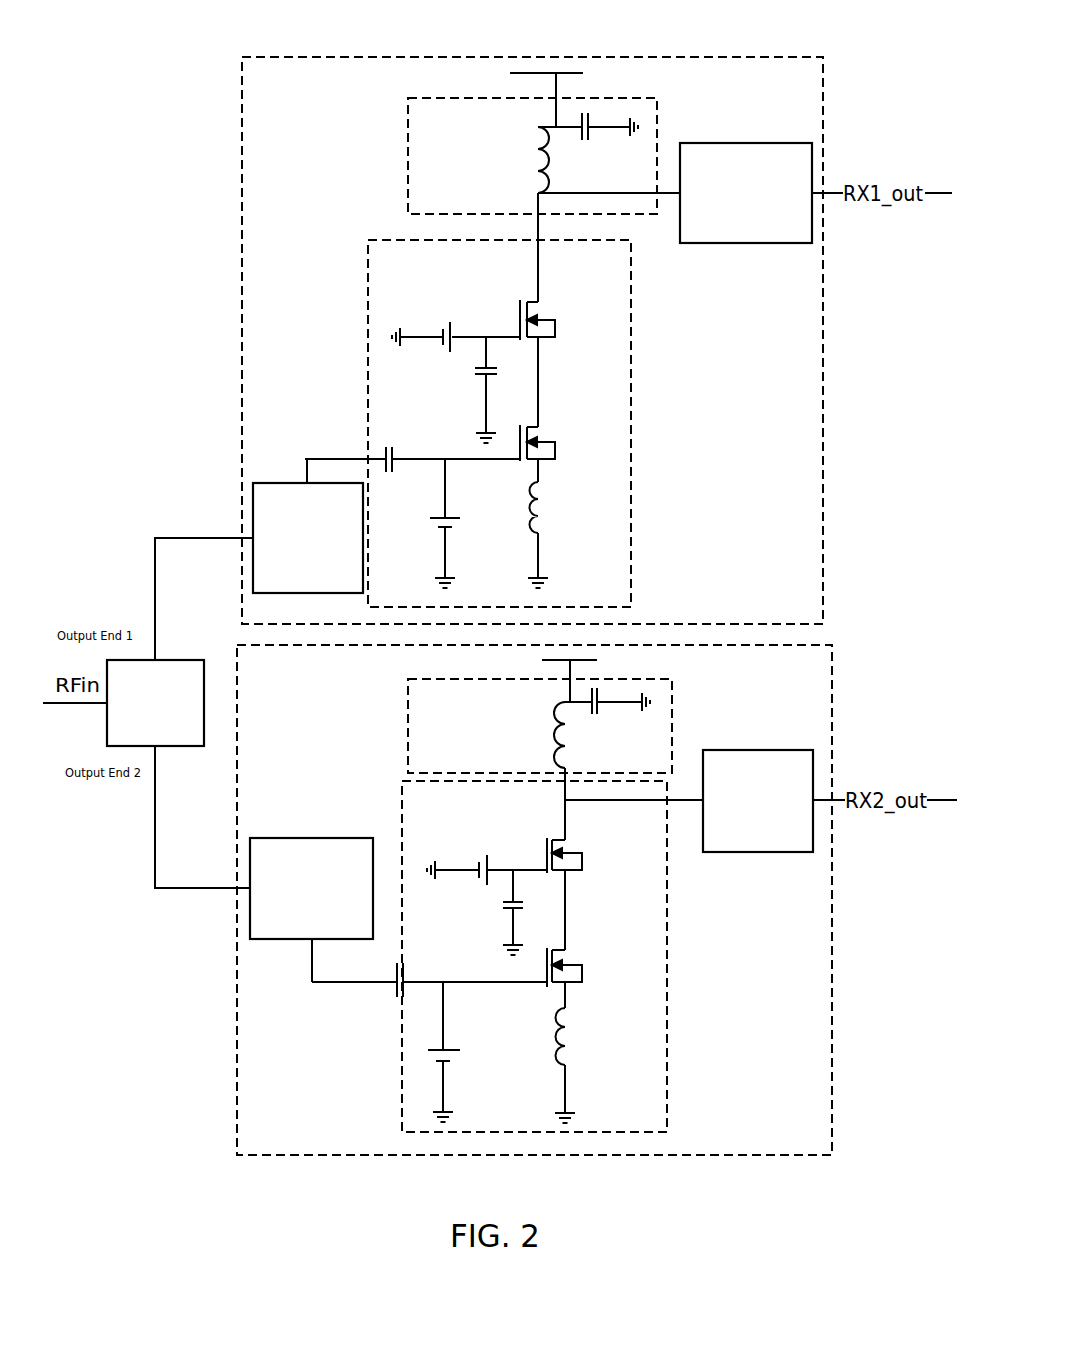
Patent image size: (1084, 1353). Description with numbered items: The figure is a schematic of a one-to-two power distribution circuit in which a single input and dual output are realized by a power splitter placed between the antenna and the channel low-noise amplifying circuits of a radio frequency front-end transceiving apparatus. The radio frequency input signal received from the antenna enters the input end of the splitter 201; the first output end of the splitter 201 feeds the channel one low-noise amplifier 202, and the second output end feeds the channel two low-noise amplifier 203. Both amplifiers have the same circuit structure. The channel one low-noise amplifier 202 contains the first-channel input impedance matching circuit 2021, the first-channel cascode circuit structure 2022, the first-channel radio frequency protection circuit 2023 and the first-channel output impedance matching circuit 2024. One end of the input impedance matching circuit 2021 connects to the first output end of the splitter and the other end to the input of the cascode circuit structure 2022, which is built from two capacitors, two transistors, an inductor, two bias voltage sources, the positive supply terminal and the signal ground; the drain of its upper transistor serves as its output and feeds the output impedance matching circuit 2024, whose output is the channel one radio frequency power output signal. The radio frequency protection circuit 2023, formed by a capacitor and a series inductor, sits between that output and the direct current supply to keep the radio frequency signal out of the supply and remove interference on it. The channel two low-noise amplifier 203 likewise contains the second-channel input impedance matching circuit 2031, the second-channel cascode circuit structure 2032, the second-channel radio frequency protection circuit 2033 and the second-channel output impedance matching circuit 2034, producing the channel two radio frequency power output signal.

The splitter 201 is at (155, 703).
The channel 1 low-noise amplifier 202 is at (532, 340).
The RX1 input impedance matching circuit 2021 is at (308, 538).
The RX1 cascode circuit structure 2022 is at (468, 423).
The RX1 radio frequency protection circuit 2023 is at (532, 139).
The RX1 output impedance matching circuit 2024 is at (746, 193).
The channel 2 low-noise amplifier 203 is at (534, 900).
The RX2 input impedance matching circuit 2031 is at (311, 888).
The RX2 cascode circuit structure 2032 is at (489, 956).
The RX2 radio frequency protection circuit 2033 is at (540, 712).
The RX2 output impedance matching circuit 2034 is at (758, 801).